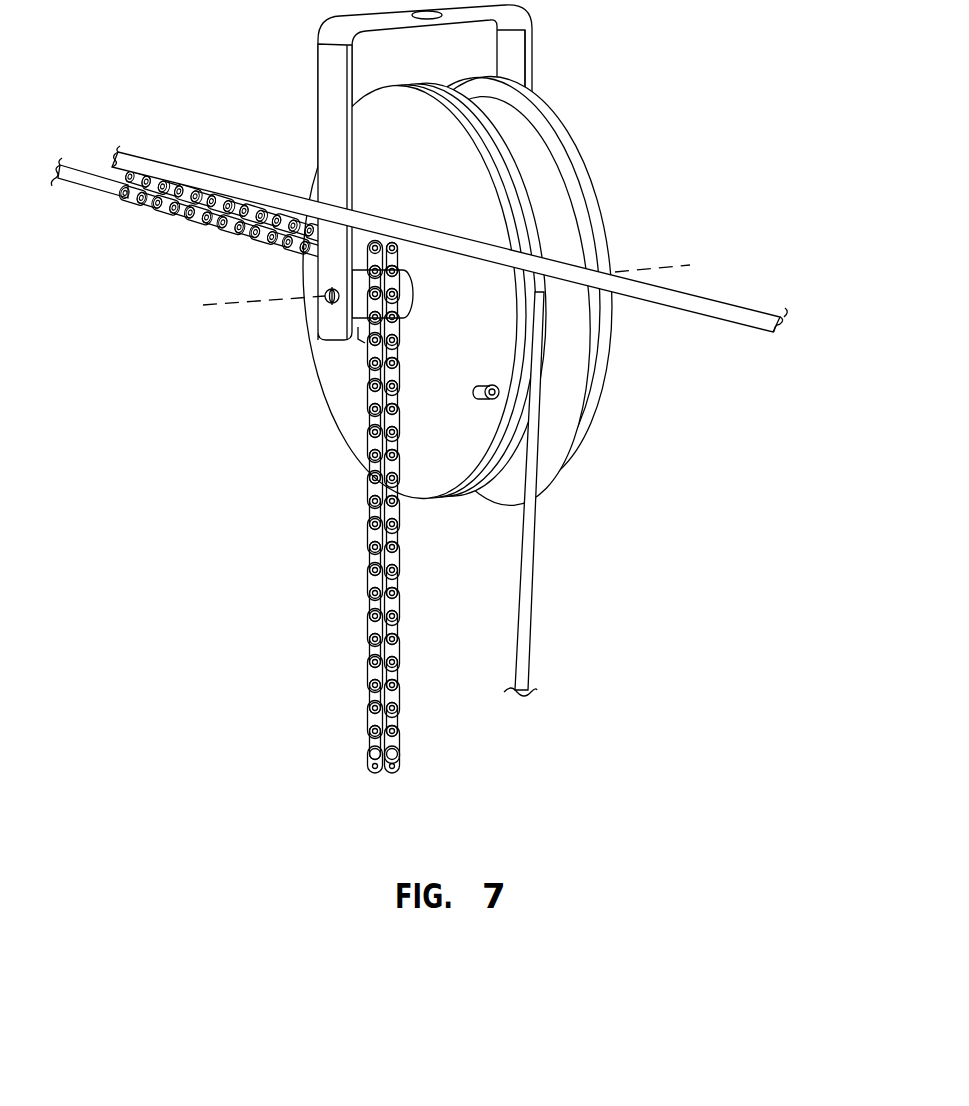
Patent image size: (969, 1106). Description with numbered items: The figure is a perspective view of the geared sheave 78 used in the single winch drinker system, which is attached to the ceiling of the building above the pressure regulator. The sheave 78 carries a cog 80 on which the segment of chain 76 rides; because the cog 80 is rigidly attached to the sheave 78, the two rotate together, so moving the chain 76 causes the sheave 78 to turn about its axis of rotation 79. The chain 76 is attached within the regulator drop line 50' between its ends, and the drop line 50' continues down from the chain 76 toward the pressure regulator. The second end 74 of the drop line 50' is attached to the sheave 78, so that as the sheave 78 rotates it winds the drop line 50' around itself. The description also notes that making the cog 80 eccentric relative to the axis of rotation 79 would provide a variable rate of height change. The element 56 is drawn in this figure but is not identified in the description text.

The regulator drop line 50' is at (192, 220).
The strap 56 is at (717, 308).
The second end 74 is at (490, 400).
The segment of chain 76 is at (370, 613).
The geared sheave 78 is at (567, 160).
The axis of rotation 79 is at (245, 303).
The cog 80 is at (373, 340).